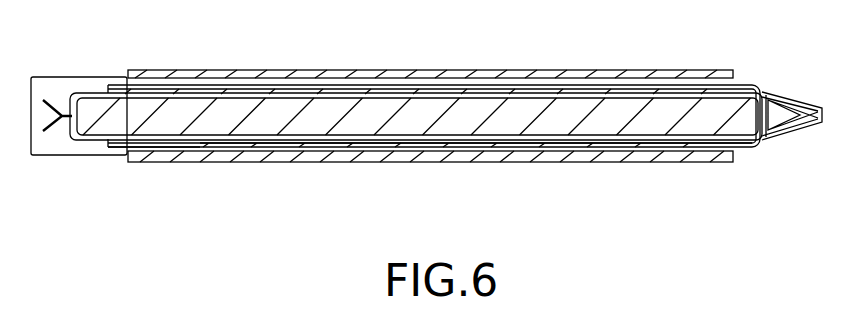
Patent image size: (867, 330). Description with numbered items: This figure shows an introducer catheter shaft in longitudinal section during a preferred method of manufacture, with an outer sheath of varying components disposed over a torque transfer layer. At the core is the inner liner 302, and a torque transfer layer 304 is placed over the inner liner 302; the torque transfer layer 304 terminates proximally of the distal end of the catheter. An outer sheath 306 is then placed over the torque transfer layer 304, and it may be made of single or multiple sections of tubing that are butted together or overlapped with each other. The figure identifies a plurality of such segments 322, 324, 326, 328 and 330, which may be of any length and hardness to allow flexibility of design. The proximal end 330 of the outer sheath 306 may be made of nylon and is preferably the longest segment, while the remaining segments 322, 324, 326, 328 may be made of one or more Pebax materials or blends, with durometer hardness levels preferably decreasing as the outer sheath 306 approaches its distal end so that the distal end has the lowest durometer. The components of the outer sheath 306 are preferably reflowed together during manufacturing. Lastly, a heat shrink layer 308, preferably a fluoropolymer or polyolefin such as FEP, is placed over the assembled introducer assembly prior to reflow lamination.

The inner liner 302 is at (95, 93).
The torque transfer layer 304 is at (184, 86).
The outer sheath 306 is at (258, 89).
The heat shrink layer 308 is at (684, 70).
The segment 322 is at (128, 153).
The segment 324 is at (173, 151).
The segment 326 is at (242, 150).
The segment 328 is at (313, 148).
The proximal end 330 is at (563, 152).